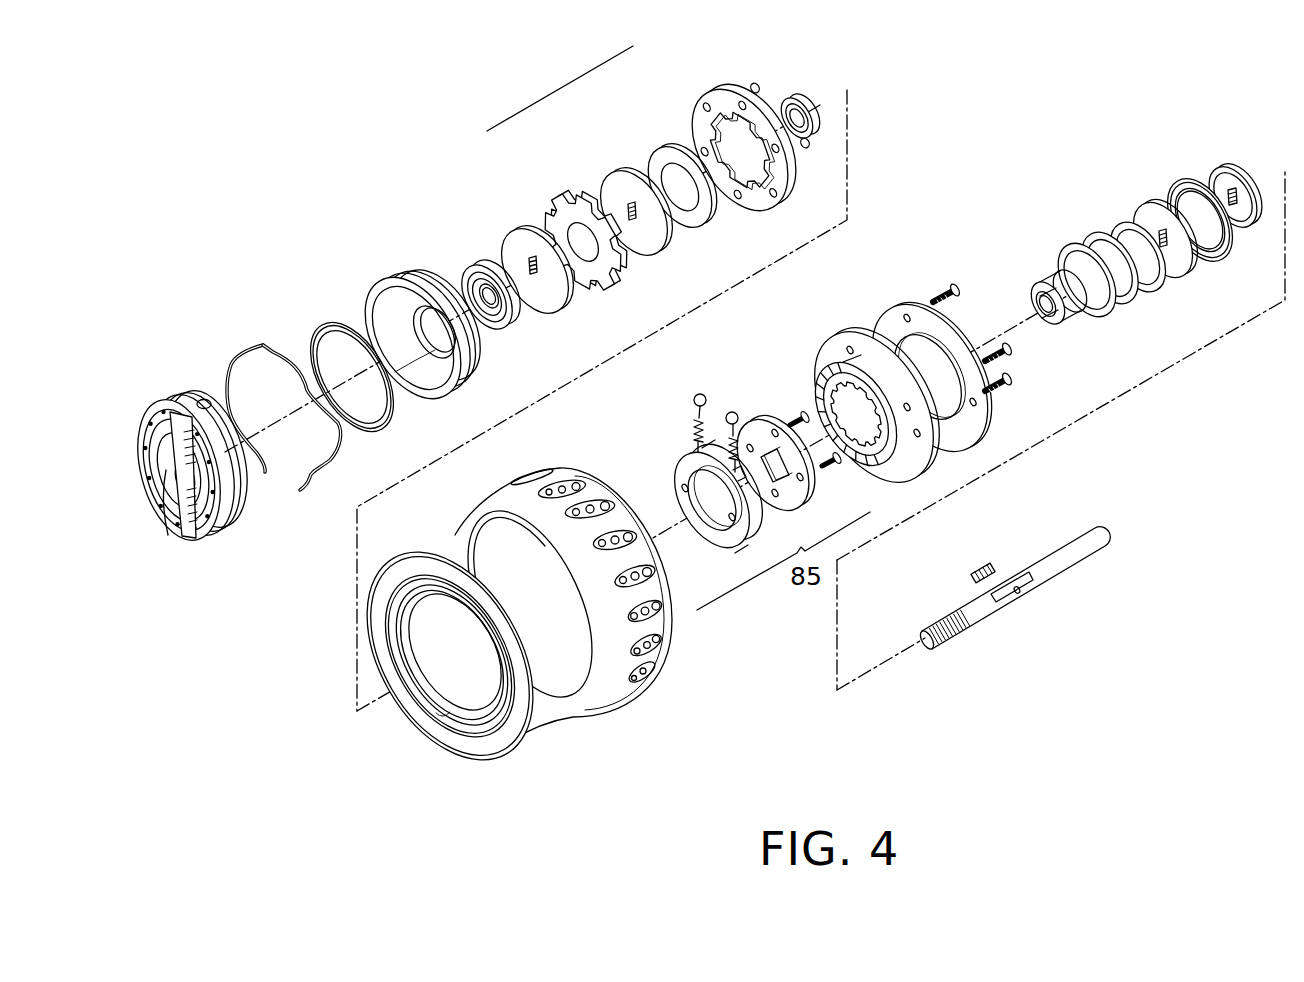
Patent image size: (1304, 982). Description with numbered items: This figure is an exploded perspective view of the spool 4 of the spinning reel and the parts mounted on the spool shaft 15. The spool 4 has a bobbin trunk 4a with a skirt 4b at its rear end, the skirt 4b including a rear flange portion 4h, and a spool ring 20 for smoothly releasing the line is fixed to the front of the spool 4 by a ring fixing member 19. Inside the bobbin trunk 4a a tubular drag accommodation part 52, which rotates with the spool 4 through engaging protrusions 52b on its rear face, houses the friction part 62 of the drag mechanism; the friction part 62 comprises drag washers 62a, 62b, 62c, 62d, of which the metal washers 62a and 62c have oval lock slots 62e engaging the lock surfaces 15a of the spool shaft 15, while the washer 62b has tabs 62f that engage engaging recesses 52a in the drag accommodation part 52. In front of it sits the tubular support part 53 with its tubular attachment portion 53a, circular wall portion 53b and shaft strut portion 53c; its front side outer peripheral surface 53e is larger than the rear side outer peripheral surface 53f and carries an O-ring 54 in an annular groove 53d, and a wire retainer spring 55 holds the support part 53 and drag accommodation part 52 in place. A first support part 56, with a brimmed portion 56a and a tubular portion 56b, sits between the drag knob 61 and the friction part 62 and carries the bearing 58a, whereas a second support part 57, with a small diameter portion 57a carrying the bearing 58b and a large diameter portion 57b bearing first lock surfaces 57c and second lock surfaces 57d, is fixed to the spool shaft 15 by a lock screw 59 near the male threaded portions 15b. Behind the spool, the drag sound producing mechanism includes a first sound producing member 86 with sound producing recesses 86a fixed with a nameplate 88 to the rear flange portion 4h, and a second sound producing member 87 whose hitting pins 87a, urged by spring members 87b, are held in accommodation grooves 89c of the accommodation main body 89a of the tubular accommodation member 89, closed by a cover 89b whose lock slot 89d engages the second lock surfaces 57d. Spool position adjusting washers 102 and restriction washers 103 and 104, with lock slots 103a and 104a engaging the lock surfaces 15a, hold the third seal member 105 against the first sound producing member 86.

The spool 4 is at (553, 594).
The bobbin trunk 4a is at (488, 563).
The skirt 4b is at (528, 478).
The rear flange portion 4h is at (565, 693).
The spool shaft 15 is at (1010, 568).
The lock surfaces 15a is at (1000, 603).
The male threaded portions 15b is at (947, 617).
The ring fixing member 19 is at (423, 573).
The spool ring 20 is at (430, 644).
The tubular drag accommodation part 52 is at (750, 120).
The engaging recesses 52a is at (698, 117).
The engaging protrusions 52b is at (758, 96).
The tubular support part 53 is at (404, 319).
The tubular attachment portion 53a is at (440, 278).
The circular wall portion 53b is at (408, 380).
The tubular shaft strut portion 53c is at (424, 357).
The annular groove 53d is at (405, 283).
The front side outer peripheral surface 53e is at (392, 303).
The rear side outer peripheral surface 53f is at (480, 347).
The O-ring 54 is at (325, 330).
The retainer spring 55 is at (265, 346).
The first support part 56 is at (513, 259).
The brimmed portion 56a is at (520, 310).
The tubular portion 56b is at (497, 327).
The second support part 57 is at (1035, 271).
The small diameter portion 57a is at (1040, 302).
The large diameter portion 57b is at (1067, 280).
The first lock surfaces 57c is at (1077, 310).
The second lock surfaces 57d is at (1057, 287).
The bearing 58a is at (478, 282).
The bearing 58b is at (806, 100).
The lock screw 59 is at (983, 565).
The drag knob 61 is at (163, 392).
The friction part 62 is at (619, 188).
The drag washer 62a is at (532, 237).
The drag washer 62b is at (626, 200).
The drag washer 62c is at (623, 172).
The drag washer 62d is at (673, 148).
The lock slot 62e is at (640, 213).
The tabs 62f is at (612, 257).
The first sound producing member 86 is at (873, 373).
The sound producing recesses 86a is at (817, 380).
The second sound producing member 87 is at (678, 393).
The hitting pins 87a is at (700, 394).
The spring members 87b is at (727, 416).
The nameplate 88 is at (893, 305).
The tubular accommodation member 89 is at (670, 485).
The accommodation main body 89a is at (693, 480).
The cover 89b is at (775, 446).
The accommodation grooves 89c is at (753, 500).
The lock slot 89d is at (808, 470).
The spool position adjusting washers 102 is at (1146, 292).
The restriction washer 103 is at (1164, 234).
The lock slot 103a is at (1162, 233).
The restriction washer 104 is at (1232, 187).
The lock slot 104a is at (1230, 178).
The third seal member 105 is at (1220, 255).